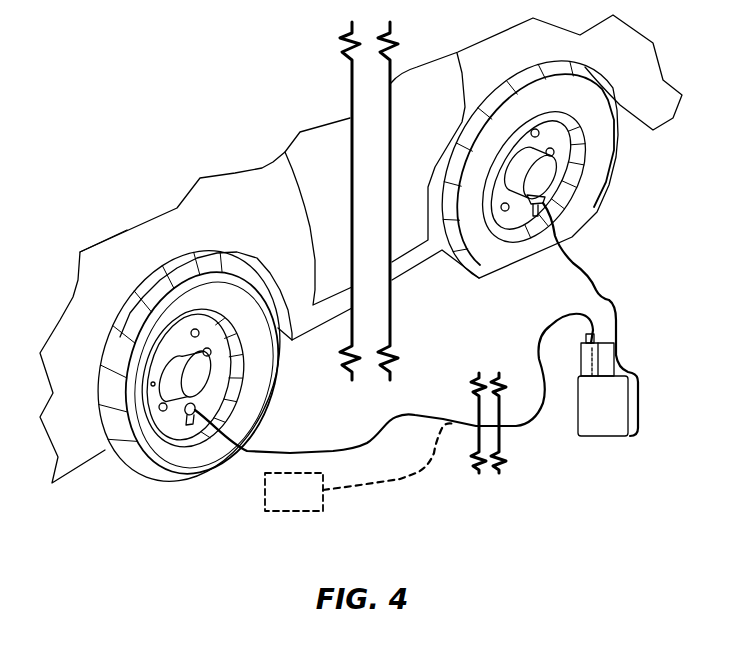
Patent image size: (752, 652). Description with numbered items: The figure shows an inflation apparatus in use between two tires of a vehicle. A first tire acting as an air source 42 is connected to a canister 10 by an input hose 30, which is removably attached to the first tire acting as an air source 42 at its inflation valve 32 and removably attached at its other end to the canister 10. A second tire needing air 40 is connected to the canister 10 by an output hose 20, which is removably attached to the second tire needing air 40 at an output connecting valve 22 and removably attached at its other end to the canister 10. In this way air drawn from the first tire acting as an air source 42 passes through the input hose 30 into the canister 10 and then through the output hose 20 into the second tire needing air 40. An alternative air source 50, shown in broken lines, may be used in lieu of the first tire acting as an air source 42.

The canister 10 is at (603, 448).
The output hose 20 is at (614, 318).
The output connecting valve 22 is at (535, 214).
The input hose 30 is at (541, 330).
The inflation valve 32 is at (193, 430).
The second tire needing air 40 is at (618, 153).
The first tire acting as an air source 42 is at (262, 406).
The alternative air source 50 is at (282, 503).